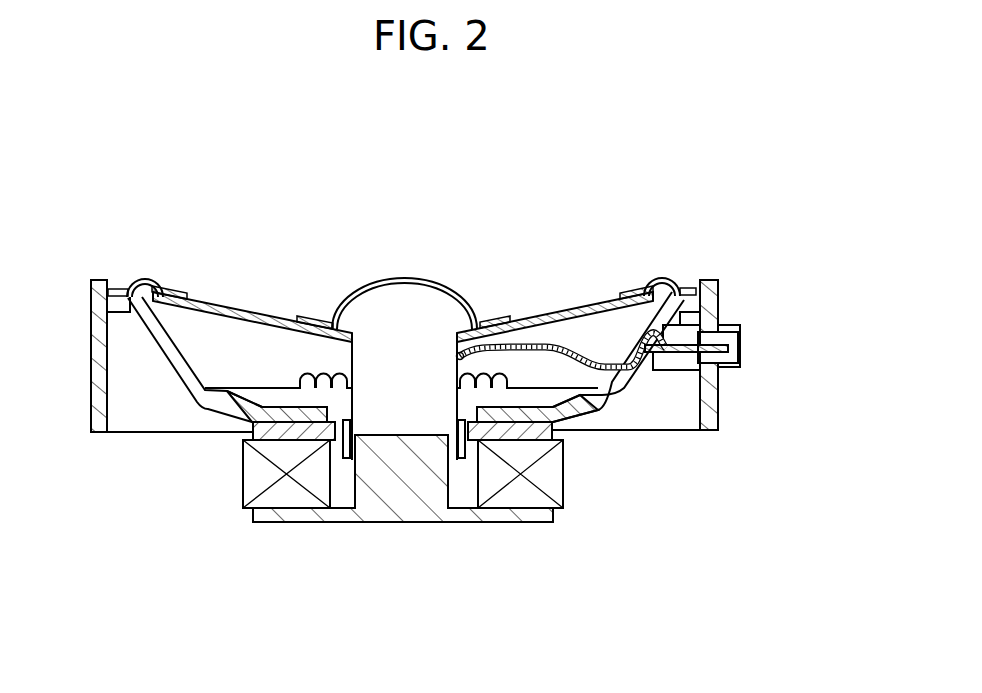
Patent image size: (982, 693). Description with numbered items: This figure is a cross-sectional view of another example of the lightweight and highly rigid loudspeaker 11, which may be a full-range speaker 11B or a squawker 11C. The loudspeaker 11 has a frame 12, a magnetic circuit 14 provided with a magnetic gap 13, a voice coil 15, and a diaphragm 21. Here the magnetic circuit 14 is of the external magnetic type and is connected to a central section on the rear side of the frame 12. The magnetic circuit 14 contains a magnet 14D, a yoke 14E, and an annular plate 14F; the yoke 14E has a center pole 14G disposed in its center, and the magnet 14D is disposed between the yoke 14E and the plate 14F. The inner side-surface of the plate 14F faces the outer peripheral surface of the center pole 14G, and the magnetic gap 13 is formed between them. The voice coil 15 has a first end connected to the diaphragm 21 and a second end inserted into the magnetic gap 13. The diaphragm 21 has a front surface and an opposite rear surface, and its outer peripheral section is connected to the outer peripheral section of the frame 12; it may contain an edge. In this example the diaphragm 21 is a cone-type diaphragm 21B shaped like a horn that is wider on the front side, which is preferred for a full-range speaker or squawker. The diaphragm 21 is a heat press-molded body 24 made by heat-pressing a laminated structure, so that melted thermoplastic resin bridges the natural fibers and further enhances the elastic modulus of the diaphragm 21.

The loudspeaker 11 is at (472, 296).
The full-range speaker 11B is at (402, 292).
The squawker 11C is at (406, 357).
The frame 12 is at (567, 415).
The magnetic gap 13 is at (453, 442).
The magnetic circuit 14 is at (374, 543).
The magnet 14D is at (290, 497).
The yoke 14E is at (307, 515).
The plate 14F is at (273, 427).
The center pole 14G is at (401, 517).
The voice coil 15 is at (553, 513).
The diaphragm 21 is at (427, 286).
The cone-type diaphragm 21B is at (593, 350).
The heat press-molded body 24 is at (593, 350).